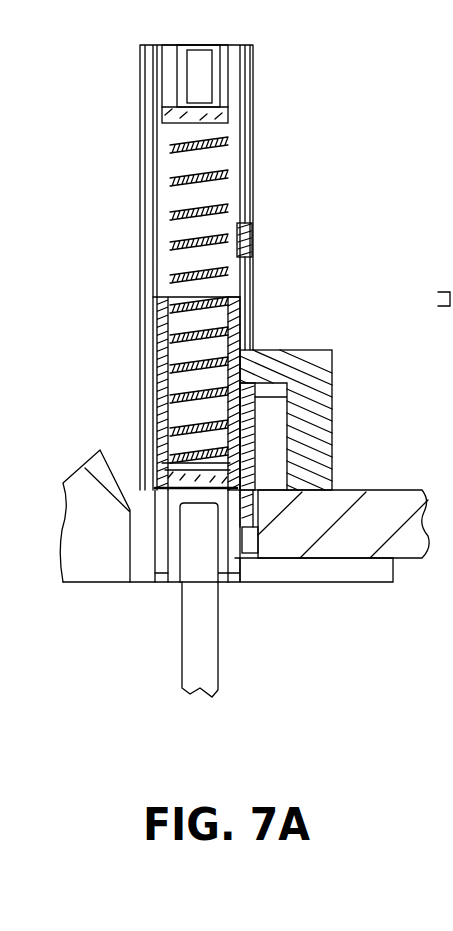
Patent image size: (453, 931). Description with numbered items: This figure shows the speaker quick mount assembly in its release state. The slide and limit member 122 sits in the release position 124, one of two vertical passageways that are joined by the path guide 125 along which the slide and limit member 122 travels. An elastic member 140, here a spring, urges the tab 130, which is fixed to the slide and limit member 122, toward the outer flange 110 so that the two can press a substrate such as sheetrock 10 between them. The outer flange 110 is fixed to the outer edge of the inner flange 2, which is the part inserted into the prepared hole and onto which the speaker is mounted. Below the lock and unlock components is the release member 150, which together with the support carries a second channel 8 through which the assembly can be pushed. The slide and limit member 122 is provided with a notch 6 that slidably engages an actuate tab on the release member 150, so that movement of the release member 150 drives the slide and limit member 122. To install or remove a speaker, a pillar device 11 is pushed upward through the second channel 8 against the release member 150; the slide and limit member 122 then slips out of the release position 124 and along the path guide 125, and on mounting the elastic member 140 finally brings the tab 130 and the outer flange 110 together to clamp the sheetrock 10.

The elastic member 140 is at (242, 132).
The path guide 125 is at (243, 233).
The release position 124 is at (243, 322).
The tab 130 is at (308, 363).
The inner flange 2 is at (248, 427).
The notch 6 is at (235, 482).
The sheetrock 10 is at (377, 512).
The outer flange 110 is at (332, 567).
The release member 150 is at (242, 562).
The second channel 8 is at (170, 533).
The pillar device 11 is at (197, 650).
The slide and limit member 122 is at (147, 363).